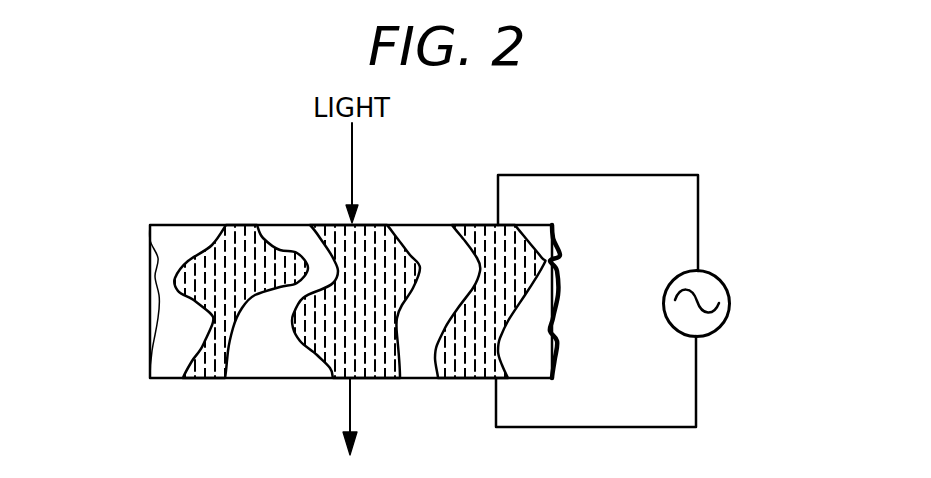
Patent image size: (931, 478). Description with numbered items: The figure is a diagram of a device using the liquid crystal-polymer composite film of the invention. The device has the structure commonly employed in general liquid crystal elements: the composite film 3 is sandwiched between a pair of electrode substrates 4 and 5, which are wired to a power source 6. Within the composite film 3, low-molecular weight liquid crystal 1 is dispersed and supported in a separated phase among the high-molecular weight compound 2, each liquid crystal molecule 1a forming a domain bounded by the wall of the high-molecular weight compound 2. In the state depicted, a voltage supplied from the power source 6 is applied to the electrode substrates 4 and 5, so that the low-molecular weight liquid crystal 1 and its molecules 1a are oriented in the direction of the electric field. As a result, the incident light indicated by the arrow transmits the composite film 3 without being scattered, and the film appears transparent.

The low-molecular weight liquid crystal 1 is at (499, 340).
The liquid crystal molecule 1a is at (207, 257).
The high-molecular weight compound 2 is at (433, 240).
The composite film 3 is at (140, 345).
The electrode substrate 4 is at (535, 225).
The electrode substrate 5 is at (530, 383).
The power source 6 is at (730, 300).